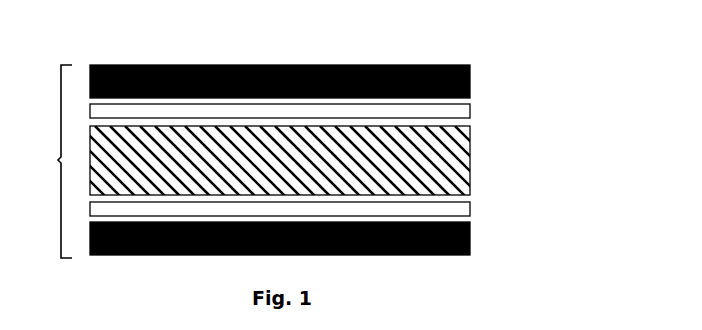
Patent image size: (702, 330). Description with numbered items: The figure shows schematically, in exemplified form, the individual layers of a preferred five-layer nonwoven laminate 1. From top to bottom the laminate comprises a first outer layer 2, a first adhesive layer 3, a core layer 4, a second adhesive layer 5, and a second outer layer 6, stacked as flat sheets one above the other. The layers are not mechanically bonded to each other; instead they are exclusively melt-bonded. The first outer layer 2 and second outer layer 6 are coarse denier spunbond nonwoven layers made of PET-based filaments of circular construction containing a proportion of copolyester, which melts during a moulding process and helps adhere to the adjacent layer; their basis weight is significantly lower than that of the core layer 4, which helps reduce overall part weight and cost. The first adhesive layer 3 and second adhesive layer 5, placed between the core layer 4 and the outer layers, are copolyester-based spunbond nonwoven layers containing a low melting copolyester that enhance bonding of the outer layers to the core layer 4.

The five-layer nonwoven laminate 1 is at (58, 160).
The first outer layer 2 is at (480, 78).
The first adhesive layer 3 is at (480, 112).
The core layer 4 is at (480, 157).
The second adhesive layer 5 is at (480, 208).
The second outer layer 6 is at (480, 247).